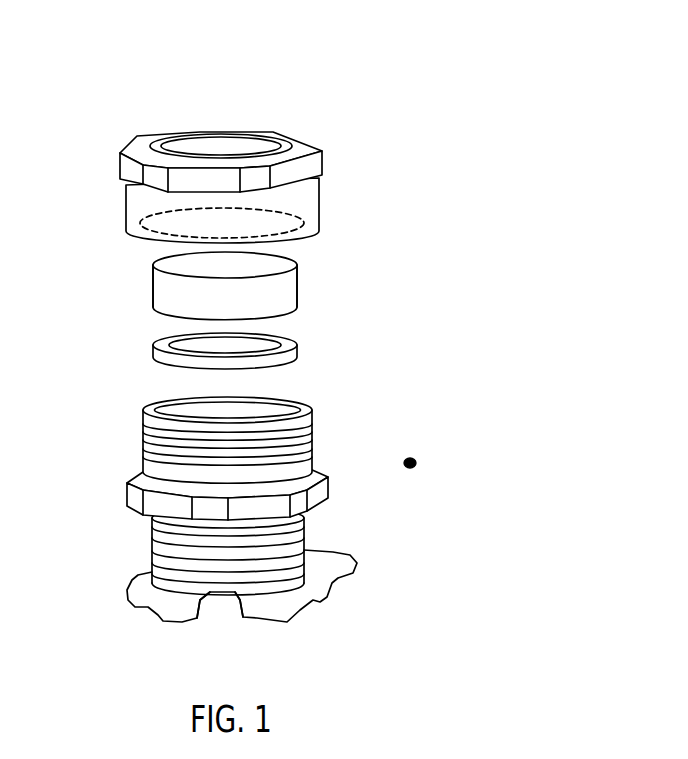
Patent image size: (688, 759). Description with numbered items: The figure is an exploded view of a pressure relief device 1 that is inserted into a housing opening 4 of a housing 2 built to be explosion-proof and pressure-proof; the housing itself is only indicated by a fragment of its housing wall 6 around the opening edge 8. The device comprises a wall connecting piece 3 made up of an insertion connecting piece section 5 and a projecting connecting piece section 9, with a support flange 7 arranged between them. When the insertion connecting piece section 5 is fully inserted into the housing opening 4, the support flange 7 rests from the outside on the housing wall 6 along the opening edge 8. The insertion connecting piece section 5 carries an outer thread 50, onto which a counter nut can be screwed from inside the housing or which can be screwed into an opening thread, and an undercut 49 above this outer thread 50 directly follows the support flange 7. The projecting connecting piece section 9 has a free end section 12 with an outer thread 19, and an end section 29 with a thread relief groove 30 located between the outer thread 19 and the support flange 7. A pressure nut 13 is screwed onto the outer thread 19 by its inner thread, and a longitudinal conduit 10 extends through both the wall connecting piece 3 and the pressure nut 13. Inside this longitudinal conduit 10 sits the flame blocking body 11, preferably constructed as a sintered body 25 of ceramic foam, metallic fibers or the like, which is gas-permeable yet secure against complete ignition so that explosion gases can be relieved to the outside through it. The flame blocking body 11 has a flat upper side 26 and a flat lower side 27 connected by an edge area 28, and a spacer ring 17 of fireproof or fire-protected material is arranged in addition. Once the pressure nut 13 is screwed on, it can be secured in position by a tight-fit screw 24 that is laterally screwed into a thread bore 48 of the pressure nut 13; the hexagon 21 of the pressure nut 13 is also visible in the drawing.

The pressure relief device 1 is at (335, 57).
The housing 2 is at (277, 605).
The wall connecting piece 3 is at (249, 480).
The housing opening 4 is at (233, 623).
The insertion connecting piece section 5 is at (249, 551).
The housing wall 6 is at (318, 600).
The support flange 7 is at (252, 494).
The opening edge 8 is at (200, 623).
The projecting connecting piece section 9 is at (212, 424).
The longitudinal conduit 10 is at (233, 143).
The flame blocking body 11 is at (247, 285).
The free end section 12 is at (318, 398).
The pressure nut 13 is at (261, 248).
The spacer ring 17 is at (304, 350).
The outer thread 19 is at (142, 418).
The hexagon of cap nut 21 is at (327, 160).
The tight-fit screw 24 is at (418, 462).
The sintered body 25 is at (247, 285).
The upper side 26 is at (173, 258).
The lower side 27 is at (168, 313).
The edge area 28 is at (163, 287).
The end section 29 is at (278, 494).
The thread relief groove 30 is at (330, 480).
The thread bore 48 is at (305, 218).
The undercut 49 is at (303, 517).
The outer thread 50 is at (315, 537).